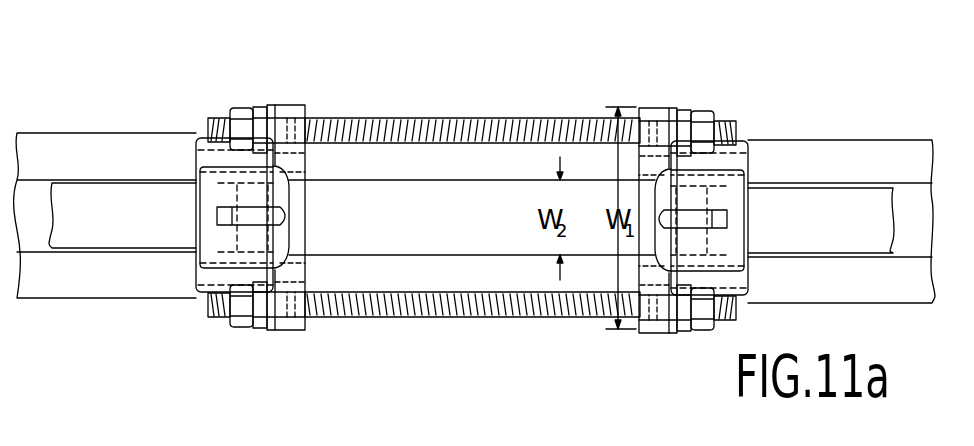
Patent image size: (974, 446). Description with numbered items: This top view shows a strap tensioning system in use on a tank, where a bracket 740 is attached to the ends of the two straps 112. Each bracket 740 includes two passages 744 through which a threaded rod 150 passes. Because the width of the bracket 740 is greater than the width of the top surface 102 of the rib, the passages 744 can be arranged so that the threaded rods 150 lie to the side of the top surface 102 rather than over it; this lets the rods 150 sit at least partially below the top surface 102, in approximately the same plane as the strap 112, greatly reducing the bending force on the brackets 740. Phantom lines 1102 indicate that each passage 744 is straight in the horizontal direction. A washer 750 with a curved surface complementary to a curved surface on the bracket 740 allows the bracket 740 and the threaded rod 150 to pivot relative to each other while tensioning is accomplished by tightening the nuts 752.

The strap 112 is at (143, 250).
The bracket 740 is at (197, 138).
The passage 744 is at (285, 132).
The washer 750 is at (256, 108).
The nut 752 is at (242, 114).
The threaded rod 150 is at (507, 117).
The phantom line 1102 is at (298, 138).
The top surface 102 is at (445, 232).